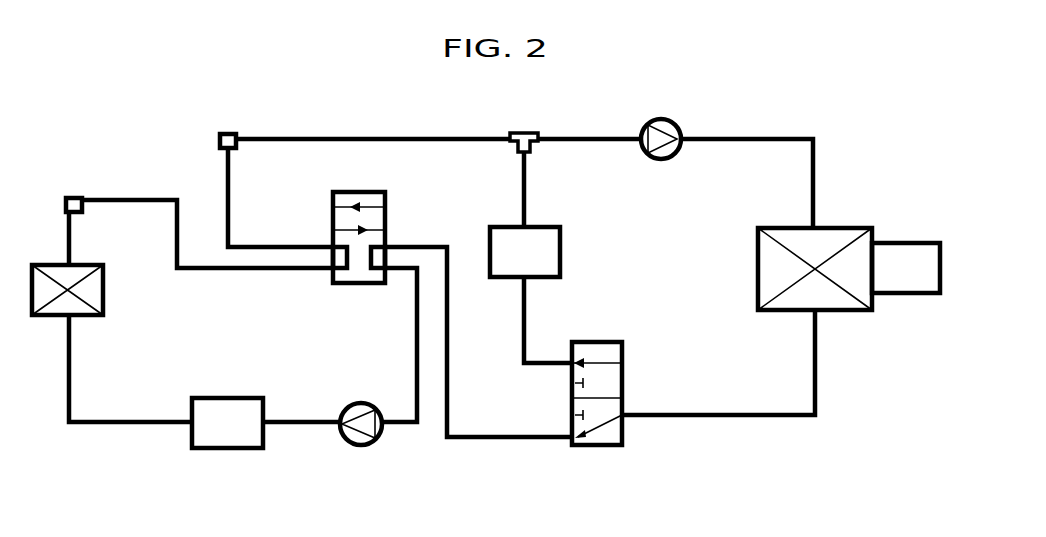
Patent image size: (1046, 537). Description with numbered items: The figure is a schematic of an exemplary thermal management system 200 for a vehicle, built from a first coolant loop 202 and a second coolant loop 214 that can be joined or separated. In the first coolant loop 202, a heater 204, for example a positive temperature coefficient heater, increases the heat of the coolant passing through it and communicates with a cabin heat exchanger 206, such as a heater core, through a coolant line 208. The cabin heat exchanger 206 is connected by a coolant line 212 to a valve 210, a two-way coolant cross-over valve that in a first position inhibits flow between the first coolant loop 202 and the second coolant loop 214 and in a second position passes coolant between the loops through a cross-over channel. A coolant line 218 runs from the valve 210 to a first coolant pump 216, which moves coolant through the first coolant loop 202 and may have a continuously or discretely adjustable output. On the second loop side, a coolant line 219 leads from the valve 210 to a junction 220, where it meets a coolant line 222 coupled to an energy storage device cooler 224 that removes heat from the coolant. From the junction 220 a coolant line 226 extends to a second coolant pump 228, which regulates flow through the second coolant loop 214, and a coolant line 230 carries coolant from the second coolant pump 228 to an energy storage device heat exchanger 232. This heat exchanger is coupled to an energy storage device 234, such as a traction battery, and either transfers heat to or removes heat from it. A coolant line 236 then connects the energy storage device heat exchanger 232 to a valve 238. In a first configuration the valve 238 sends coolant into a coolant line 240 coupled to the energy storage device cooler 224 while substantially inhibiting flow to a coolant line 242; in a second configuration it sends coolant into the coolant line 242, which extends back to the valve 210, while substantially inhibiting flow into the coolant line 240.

The thermal management system 200 is at (99, 78).
The first coolant loop 202 is at (359, 464).
The heater 204 is at (199, 400).
The cabin heat exchanger 206 is at (103, 311).
The coolant line 208 is at (88, 421).
The valve 210 is at (343, 192).
The coolant line 212 is at (110, 201).
The second coolant loop 214 is at (787, 442).
The first coolant pump 216 is at (360, 403).
The coolant line 218 is at (415, 323).
The coolant line 219 is at (295, 138).
The junction 220 is at (519, 132).
The coolant line 222 is at (527, 190).
The energy storage device cooler 224 is at (562, 252).
The coolant line 226 is at (587, 137).
The second coolant pump 228 is at (657, 118).
The coolant line 230 is at (760, 137).
The energy storage device heat exchanger 232 is at (770, 227).
The energy storage device 234 is at (905, 243).
The coolant line 236 is at (818, 385).
The valve 238 is at (593, 342).
The coolant line 240 is at (527, 294).
The coolant line 242 is at (492, 433).